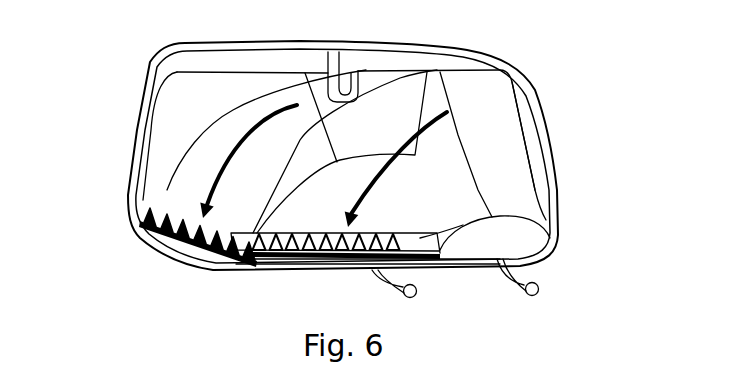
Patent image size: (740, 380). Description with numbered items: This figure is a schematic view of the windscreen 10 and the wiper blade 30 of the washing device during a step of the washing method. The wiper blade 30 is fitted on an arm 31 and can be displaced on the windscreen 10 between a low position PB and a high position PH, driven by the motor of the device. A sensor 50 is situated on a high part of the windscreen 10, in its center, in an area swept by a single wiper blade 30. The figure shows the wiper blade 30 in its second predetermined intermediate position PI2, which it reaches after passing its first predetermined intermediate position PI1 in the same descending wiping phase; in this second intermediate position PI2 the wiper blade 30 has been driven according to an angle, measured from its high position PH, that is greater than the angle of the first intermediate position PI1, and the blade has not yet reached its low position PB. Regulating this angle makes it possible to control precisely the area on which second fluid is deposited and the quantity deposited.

The windscreen 10 is at (203, 78).
The sensor 50 is at (345, 88).
The wiper blade 30 is at (283, 262).
The arm 31 is at (515, 287).
The high position PH is at (443, 88).
The first predetermined intermediate position PI1 is at (530, 174).
The second predetermined intermediate position PI2 is at (168, 210).
The low position PB is at (152, 230).